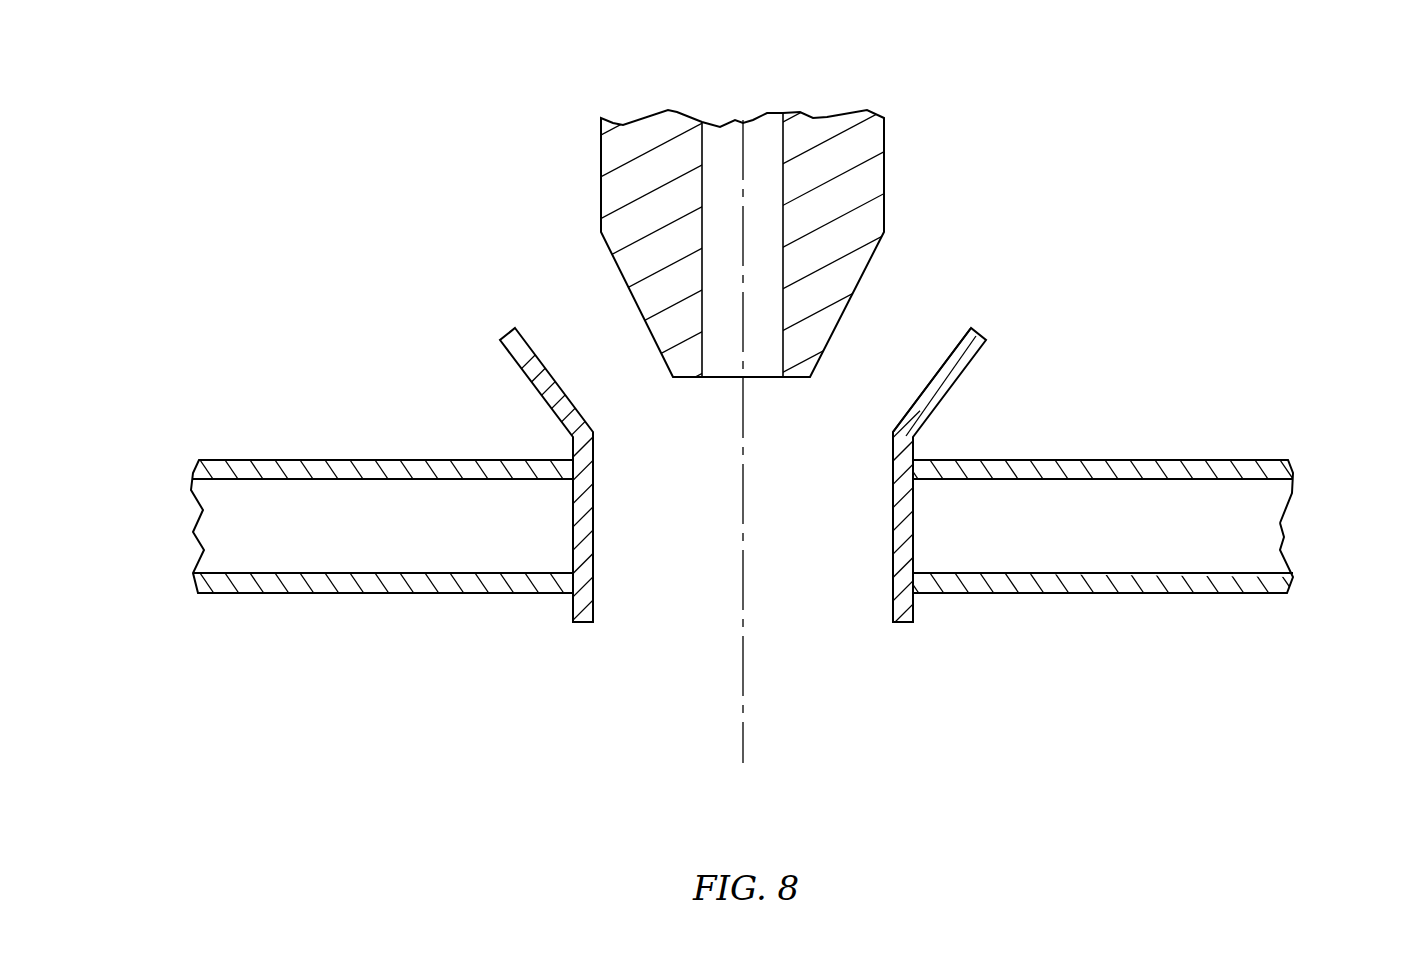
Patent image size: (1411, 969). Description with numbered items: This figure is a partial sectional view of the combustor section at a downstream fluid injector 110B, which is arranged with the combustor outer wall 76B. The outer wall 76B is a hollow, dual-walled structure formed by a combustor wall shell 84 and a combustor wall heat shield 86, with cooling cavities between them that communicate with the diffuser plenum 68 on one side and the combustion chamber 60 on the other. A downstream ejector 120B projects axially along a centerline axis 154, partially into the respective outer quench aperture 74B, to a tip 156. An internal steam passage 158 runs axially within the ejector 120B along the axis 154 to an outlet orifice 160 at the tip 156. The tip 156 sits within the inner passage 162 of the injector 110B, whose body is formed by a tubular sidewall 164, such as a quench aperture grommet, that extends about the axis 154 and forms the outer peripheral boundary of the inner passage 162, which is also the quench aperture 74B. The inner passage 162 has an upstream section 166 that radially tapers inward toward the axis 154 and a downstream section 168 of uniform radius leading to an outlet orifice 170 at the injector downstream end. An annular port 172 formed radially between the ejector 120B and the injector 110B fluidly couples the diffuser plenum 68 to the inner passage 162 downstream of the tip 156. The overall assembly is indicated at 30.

The mounting system 30 is at (734, 408).
The internal steam passage 158 is at (761, 128).
The downstream ejector 120B is at (806, 392).
The diffuser plenum 68 is at (362, 277).
The port 172 is at (575, 331).
The upstream section 166 is at (918, 345).
The downstream fluid injector 110B is at (1005, 332).
The tubular sidewall 164 is at (955, 385).
The outlet orifice 160 is at (718, 380).
The tip 156 is at (792, 380).
The outer wall 76B is at (186, 520).
The combustor wall shell 84 is at (1298, 466).
The combustor wall heat shield 86 is at (1298, 589).
The outlet orifice 170 is at (613, 620).
The outer quench aperture 74B is at (679, 605).
The inner passage 162 is at (686, 675).
The downstream section 168 is at (848, 599).
The centerline axis 154 is at (743, 752).
The combustion chamber 60 is at (936, 817).